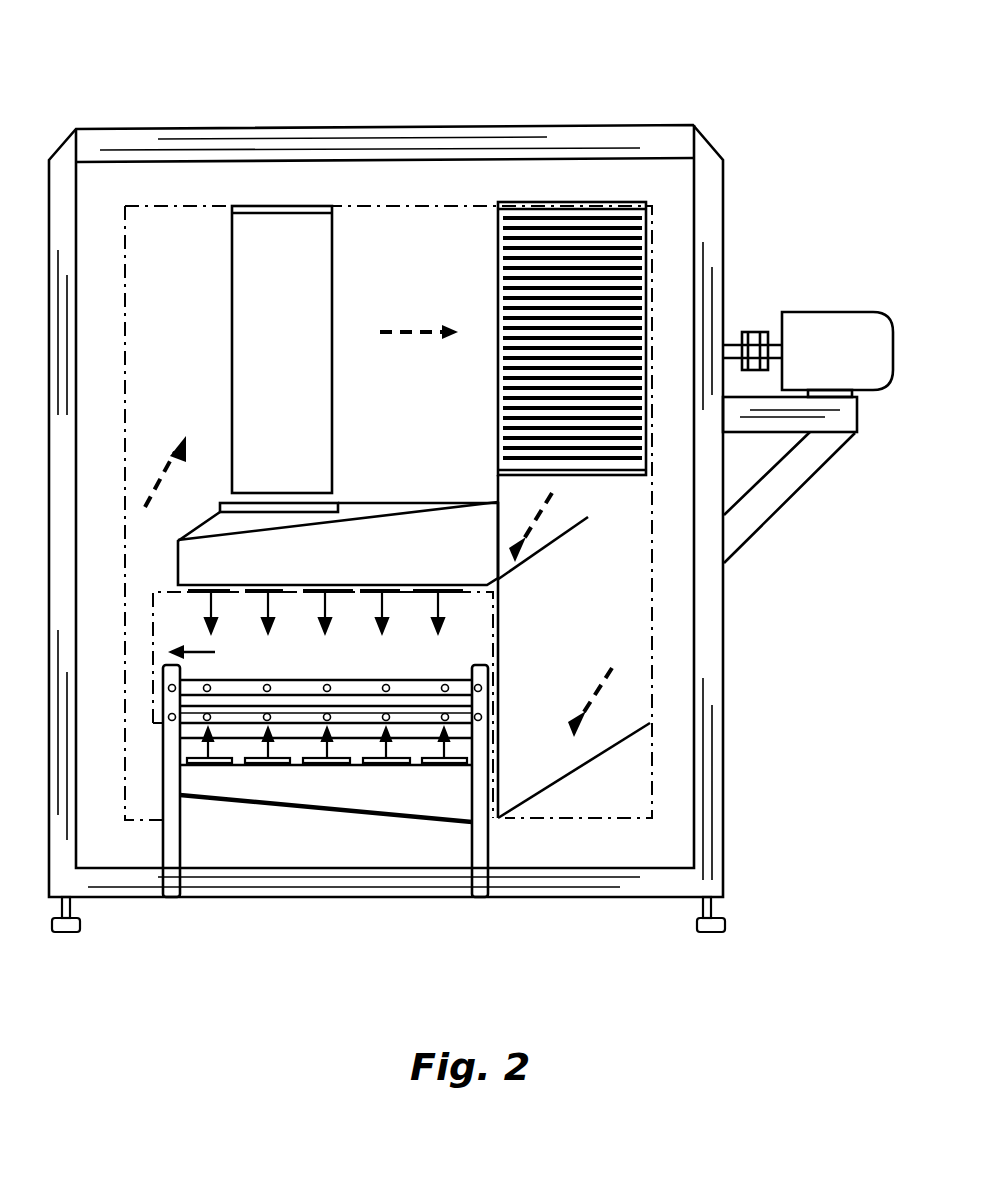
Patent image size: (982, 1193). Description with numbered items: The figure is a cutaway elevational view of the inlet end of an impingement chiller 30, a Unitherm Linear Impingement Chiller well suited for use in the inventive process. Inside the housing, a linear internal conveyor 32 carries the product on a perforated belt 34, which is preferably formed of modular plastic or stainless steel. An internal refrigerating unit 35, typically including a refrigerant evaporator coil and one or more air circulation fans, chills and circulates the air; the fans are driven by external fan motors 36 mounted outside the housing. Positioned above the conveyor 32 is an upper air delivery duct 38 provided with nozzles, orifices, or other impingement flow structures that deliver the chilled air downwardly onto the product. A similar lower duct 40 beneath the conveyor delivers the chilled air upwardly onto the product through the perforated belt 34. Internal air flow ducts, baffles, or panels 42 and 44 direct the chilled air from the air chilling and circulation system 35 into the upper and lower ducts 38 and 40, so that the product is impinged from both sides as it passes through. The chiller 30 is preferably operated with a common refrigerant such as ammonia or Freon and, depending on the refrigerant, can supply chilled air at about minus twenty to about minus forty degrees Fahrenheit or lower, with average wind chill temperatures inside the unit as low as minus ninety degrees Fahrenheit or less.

The impingement chiller 30 is at (470, 122).
The linear internal conveyor 32 is at (278, 687).
The perforated belt 34 is at (425, 678).
The internal refrigerating unit 35 is at (605, 275).
The external fan motors 36 is at (823, 342).
The upper air delivery duct 38 is at (222, 560).
The lower duct 40 is at (288, 792).
The internal air flow duct, baffle, or panel 42 is at (542, 550).
The internal air flow duct, baffle, or panel 44 is at (597, 753).